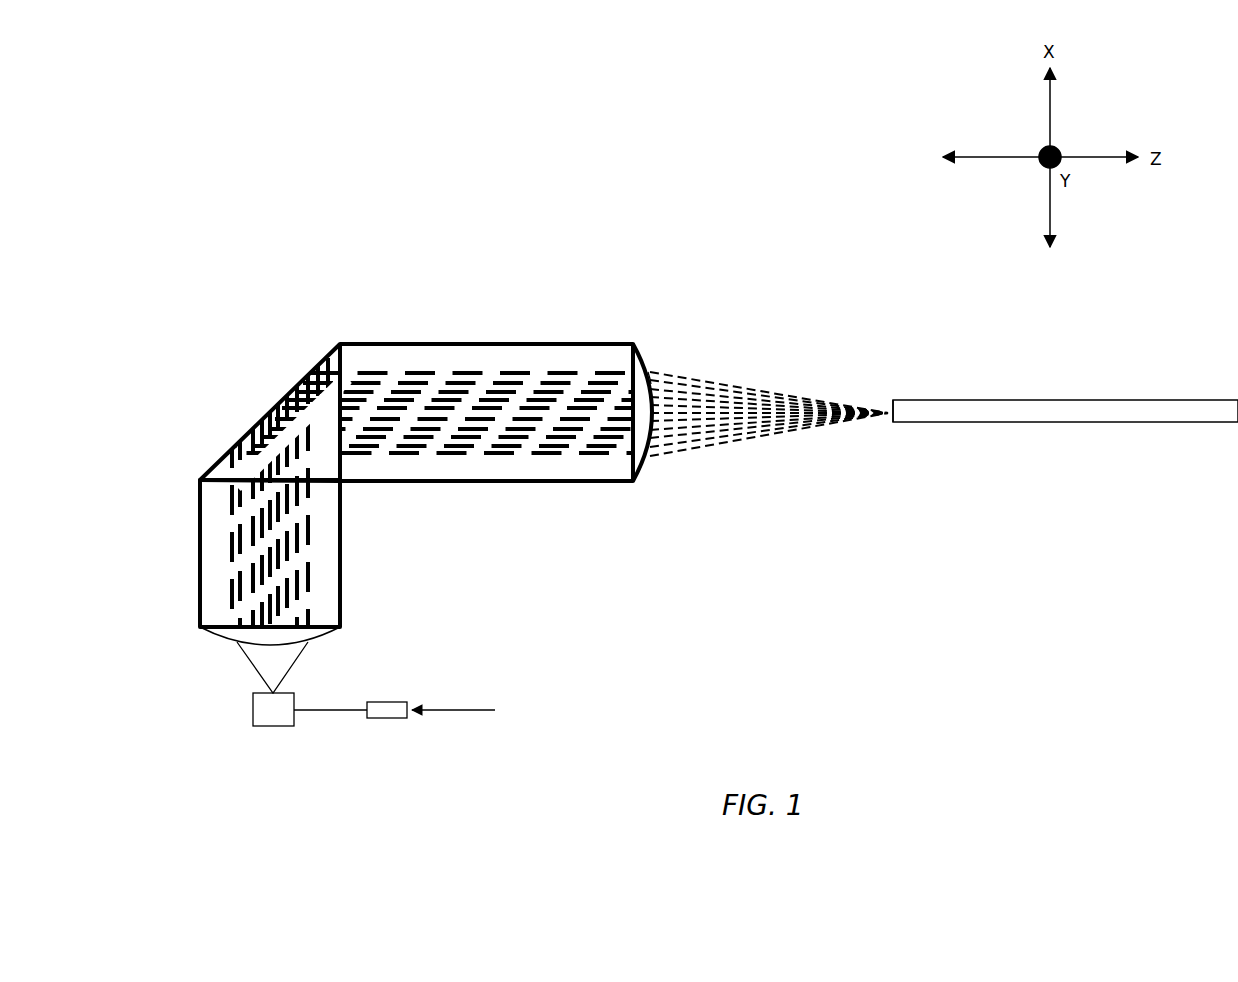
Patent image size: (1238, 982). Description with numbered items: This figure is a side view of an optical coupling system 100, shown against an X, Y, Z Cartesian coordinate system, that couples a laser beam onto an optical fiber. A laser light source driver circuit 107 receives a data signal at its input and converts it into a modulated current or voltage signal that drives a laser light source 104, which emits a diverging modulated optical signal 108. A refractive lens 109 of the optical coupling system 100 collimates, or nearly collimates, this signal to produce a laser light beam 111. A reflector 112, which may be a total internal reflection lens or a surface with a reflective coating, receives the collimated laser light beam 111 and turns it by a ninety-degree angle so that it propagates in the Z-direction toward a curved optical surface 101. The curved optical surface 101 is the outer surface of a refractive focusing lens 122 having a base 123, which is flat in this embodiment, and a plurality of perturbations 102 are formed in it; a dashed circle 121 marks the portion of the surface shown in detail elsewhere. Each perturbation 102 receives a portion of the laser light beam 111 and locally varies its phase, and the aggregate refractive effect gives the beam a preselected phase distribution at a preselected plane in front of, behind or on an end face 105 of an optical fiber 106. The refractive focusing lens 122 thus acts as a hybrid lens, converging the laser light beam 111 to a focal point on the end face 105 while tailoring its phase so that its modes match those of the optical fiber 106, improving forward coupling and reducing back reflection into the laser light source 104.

The optical coupling system 100 is at (262, 195).
The curved optical surface 101 is at (648, 467).
The perturbations 102 is at (655, 394).
The laser light source 104 is at (253, 707).
The end face 105 is at (893, 401).
The optical fiber 106 is at (1016, 423).
The laser light source driver circuit 107 is at (387, 700).
The modulated optical signal 108 is at (245, 653).
The refractive lens 109 is at (333, 635).
The laser light beam 111 is at (463, 373).
The reflector 112 is at (323, 357).
The dashed circle 121 is at (650, 374).
The refractive focusing lens 122 is at (676, 467).
The base 123 is at (638, 466).